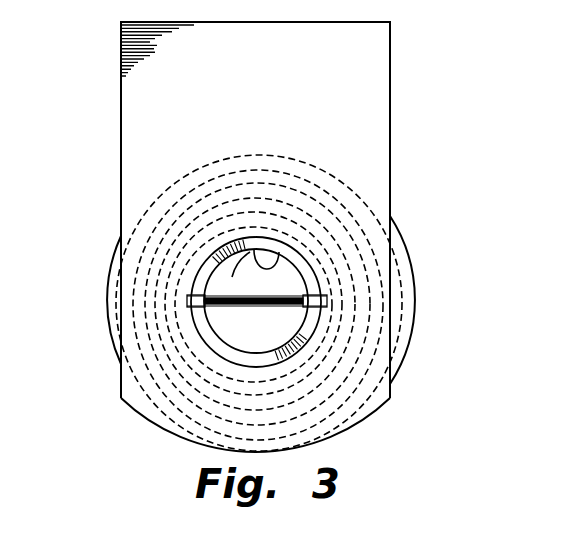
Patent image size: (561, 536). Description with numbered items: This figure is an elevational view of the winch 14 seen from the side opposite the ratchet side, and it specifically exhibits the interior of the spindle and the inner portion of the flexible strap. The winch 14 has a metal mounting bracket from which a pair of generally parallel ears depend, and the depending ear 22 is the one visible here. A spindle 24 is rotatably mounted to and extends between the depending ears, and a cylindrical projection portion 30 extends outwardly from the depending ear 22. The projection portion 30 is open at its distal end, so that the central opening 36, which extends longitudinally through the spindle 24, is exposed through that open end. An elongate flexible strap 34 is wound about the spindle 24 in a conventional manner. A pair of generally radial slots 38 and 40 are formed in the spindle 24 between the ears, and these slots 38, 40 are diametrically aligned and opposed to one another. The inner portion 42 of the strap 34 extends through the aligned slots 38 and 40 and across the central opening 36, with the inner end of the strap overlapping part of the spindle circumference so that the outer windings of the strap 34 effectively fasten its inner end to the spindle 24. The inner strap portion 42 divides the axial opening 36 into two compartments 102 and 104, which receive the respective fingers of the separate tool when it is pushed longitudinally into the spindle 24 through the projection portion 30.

The winch 14 is at (391, 52).
The depending ear 22 is at (373, 87).
The spindle 24 is at (300, 343).
The projection portion 30 is at (320, 283).
The flexible strap 34 is at (420, 302).
The central opening 36 is at (284, 258).
The radial slot 38 is at (204, 255).
The radial slot 40 is at (316, 282).
The inner portion of strap 42 is at (252, 306).
The compartment 102 is at (234, 247).
The compartment 104 is at (226, 318).